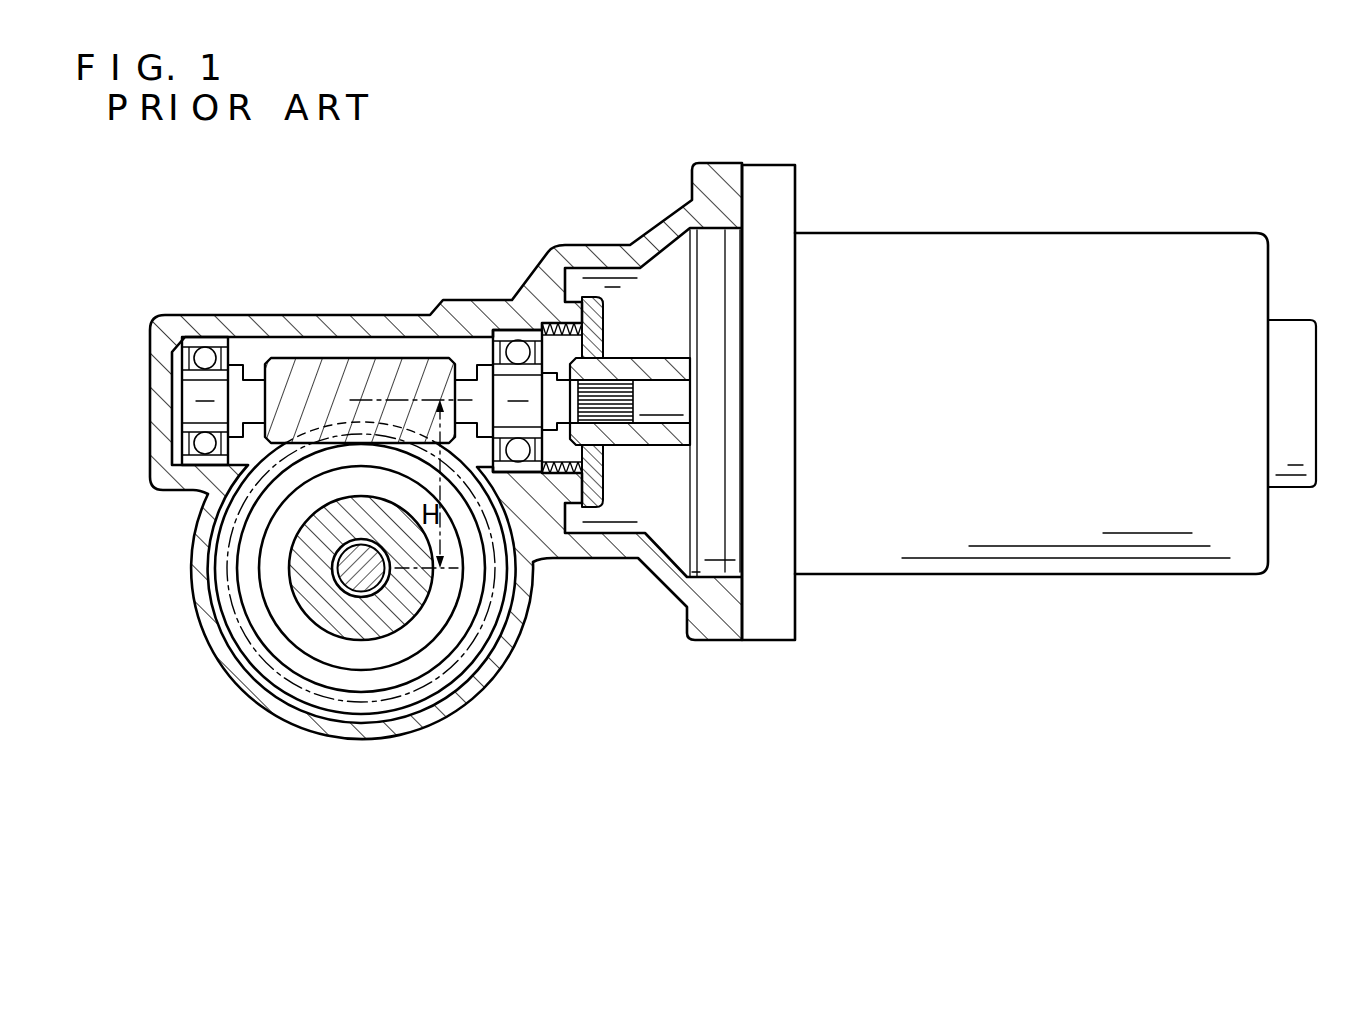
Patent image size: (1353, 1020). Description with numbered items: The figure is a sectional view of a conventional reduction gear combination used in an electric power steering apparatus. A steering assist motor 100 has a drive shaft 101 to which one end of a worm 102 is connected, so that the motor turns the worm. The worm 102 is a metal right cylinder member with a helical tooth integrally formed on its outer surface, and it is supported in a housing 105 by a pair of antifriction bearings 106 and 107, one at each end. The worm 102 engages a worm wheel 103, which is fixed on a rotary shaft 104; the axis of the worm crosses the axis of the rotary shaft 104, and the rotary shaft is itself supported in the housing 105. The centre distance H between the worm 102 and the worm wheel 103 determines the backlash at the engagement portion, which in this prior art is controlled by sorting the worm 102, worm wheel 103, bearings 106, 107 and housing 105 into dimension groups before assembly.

The steering assist motor 100 is at (942, 233).
The drive shaft 101 is at (668, 392).
The worm 102 is at (362, 375).
The worm wheel 103 is at (190, 548).
The rotary shaft 104 is at (323, 608).
The housing 105 is at (207, 630).
The antifriction bearing 106 is at (520, 300).
The antifriction bearing 107 is at (213, 315).